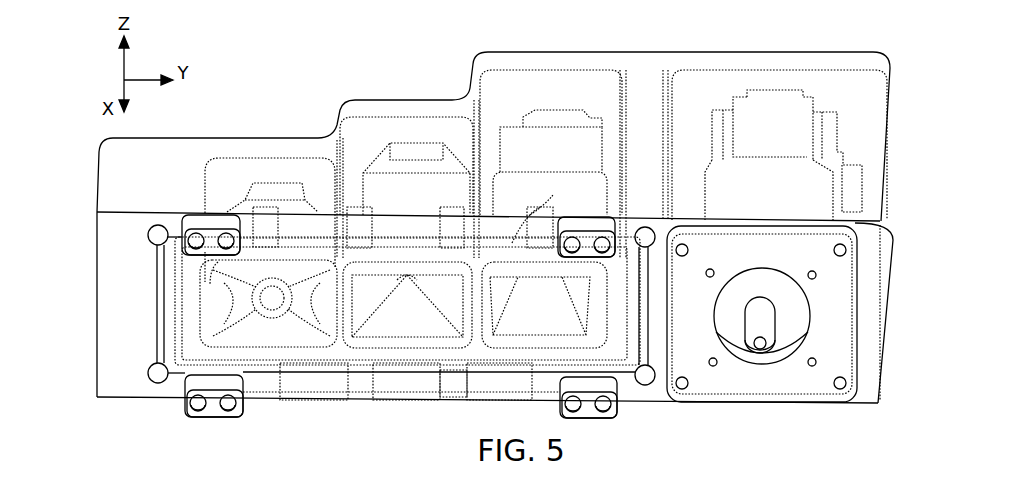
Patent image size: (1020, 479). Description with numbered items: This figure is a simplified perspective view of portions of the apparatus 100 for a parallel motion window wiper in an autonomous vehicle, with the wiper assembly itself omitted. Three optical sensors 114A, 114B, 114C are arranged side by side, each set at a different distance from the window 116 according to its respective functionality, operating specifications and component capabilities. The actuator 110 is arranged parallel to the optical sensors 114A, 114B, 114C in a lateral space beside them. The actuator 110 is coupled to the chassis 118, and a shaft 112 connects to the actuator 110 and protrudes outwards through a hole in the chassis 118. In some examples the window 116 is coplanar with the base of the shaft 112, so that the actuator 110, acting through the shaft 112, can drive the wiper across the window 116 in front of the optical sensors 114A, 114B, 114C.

The apparatus 100 is at (61, 114).
The actuator 110 is at (773, 172).
The shaft 112 is at (765, 322).
The optical sensor 114A is at (275, 182).
The optical sensor 114B is at (398, 160).
The optical sensor 114C is at (550, 175).
The window 116 is at (157, 281).
The chassis 118 is at (857, 308).